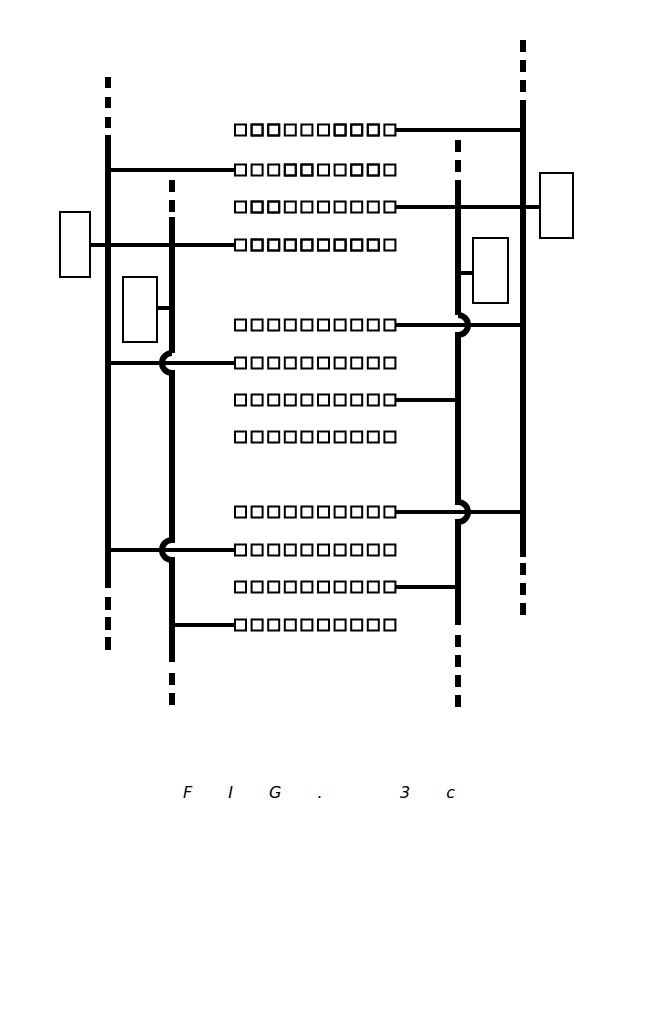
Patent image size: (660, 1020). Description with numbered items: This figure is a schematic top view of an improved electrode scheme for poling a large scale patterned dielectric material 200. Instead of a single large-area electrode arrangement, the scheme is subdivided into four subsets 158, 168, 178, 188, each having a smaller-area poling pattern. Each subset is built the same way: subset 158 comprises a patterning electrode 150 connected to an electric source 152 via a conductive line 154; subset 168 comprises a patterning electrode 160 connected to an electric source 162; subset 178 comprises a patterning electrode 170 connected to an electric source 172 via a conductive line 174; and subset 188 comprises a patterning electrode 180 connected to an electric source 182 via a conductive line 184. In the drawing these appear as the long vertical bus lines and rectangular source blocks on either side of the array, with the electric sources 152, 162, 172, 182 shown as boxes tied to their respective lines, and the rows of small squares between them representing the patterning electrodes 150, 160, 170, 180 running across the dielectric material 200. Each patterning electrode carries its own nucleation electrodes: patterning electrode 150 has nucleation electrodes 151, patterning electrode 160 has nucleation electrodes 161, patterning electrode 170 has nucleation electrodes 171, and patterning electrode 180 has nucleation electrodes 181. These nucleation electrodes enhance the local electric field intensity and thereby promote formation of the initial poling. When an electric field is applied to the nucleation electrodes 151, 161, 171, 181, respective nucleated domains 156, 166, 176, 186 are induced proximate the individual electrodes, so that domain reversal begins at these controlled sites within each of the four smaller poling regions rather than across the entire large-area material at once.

The patterning electrode 150 is at (396, 168).
The nucleation electrode 151 is at (357, 176).
The electric source 152 is at (60, 245).
The conductive line 154 is at (108, 440).
The nucleated domain 156 is at (306, 164).
The subset 158 is at (68, 196).
The patterning electrode 160 is at (235, 130).
The nucleation electrode 161 is at (273, 137).
The electric source 162 is at (573, 200).
The nucleated domain 166 is at (373, 124).
The subset 168 is at (563, 163).
The patterning electrode 170 is at (396, 243).
The nucleation electrode 171 is at (357, 251).
The electric source 172 is at (123, 318).
The conductive line 174 is at (172, 485).
The nucleated domain 176 is at (290, 251).
The subset 178 is at (153, 257).
The patterning electrode 180 is at (235, 207).
The nucleation electrode 181 is at (273, 214).
The electric source 182 is at (508, 282).
The conductive line 184 is at (523, 400).
The nucleated domain 186 is at (340, 251).
The subset 188 is at (475, 216).
The large scale patterned dielectric material 200 is at (397, 667).